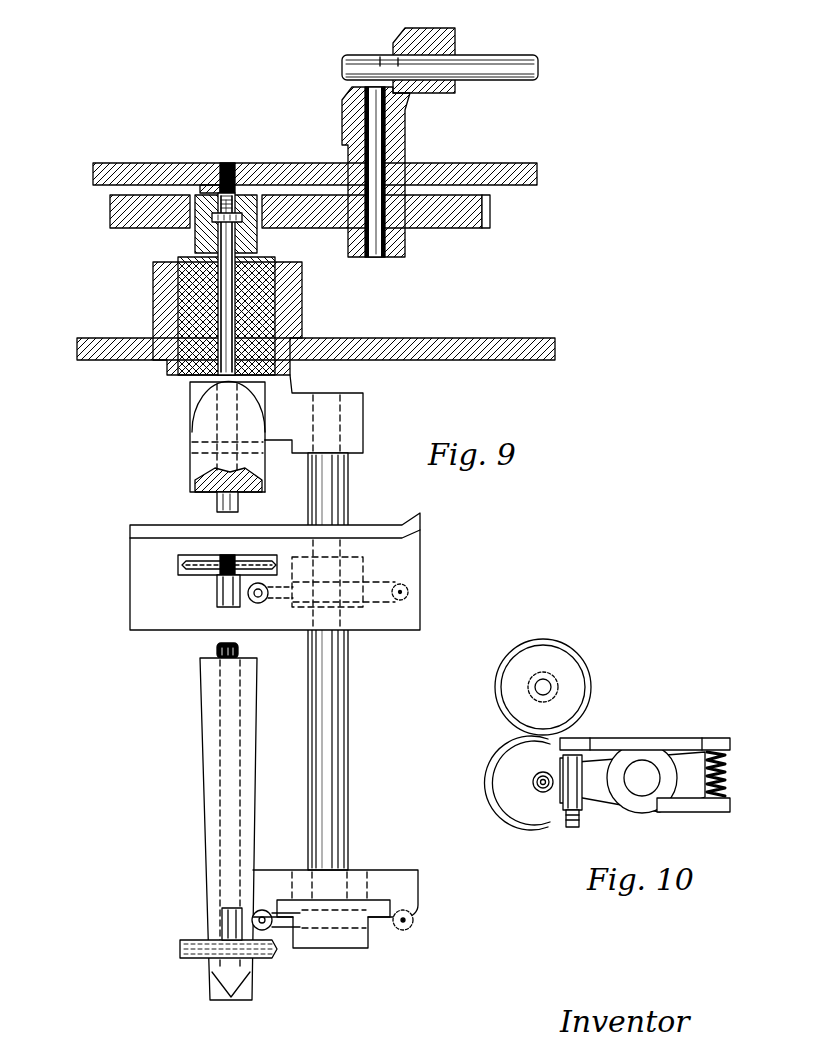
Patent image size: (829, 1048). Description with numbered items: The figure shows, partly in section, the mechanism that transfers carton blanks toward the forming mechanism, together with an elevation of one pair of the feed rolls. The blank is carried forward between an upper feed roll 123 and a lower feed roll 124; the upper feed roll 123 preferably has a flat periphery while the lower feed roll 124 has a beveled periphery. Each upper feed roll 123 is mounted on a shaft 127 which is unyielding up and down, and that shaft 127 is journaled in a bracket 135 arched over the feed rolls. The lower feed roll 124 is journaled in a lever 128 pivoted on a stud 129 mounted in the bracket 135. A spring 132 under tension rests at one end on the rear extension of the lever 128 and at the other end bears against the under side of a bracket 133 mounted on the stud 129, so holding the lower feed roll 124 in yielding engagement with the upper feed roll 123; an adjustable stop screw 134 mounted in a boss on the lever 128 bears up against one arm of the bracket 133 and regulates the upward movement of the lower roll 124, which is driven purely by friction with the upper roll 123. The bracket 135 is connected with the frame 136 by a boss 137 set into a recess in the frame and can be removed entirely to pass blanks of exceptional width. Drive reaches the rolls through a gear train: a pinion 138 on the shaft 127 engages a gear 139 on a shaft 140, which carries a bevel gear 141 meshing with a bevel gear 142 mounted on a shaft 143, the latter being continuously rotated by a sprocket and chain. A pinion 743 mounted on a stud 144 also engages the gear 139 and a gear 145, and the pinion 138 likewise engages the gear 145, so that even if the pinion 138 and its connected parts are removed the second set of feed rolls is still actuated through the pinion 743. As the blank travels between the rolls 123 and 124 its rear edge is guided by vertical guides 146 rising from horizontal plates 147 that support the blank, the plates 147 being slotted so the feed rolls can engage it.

In FIG. 9, the upper feed roll 123 is at (210, 940).
In FIG. 10, the upper feed roll 123 is at (592, 670).
In FIG. 9, the lower feed roll 124 is at (197, 566).
In FIG. 10, the lower feed roll 124 is at (505, 761).
In FIG. 9, the shaft 127 is at (238, 250).
In FIG. 10, the shaft 127 is at (550, 660).
In FIG. 9, the lever 128 is at (400, 584).
In FIG. 10, the lever 128 is at (603, 803).
In FIG. 9, the stud 129 is at (349, 707).
In FIG. 10, the stud 129 is at (642, 768).
In FIG. 9, the spring 132 is at (415, 920).
In FIG. 10, the spring 132 is at (727, 773).
In FIG. 9, the bracket 133 is at (392, 875).
In FIG. 10, the bracket 133 is at (687, 740).
In FIG. 9, the adjustable stop screw 134 is at (256, 603).
In FIG. 10, the adjustable stop screw 134 is at (570, 823).
In FIG. 9, the bracket 135 is at (192, 407).
In FIG. 9, the frame 136 is at (463, 338).
In FIG. 9, the boss 137 is at (285, 262).
In FIG. 9, the pinion 138 is at (198, 233).
In FIG. 9, the gear 139 is at (490, 216).
In FIG. 9, the shaft 140 is at (382, 258).
In FIG. 9, the bevel gear 141 is at (406, 133).
In FIG. 9, the bevel gear 142 is at (418, 42).
In FIG. 9, the shaft 143 is at (493, 65).
In FIG. 9, the stud 144 is at (231, 165).
In FIG. 9, the gear 145 is at (108, 216).
In FIG. 9, the vertical guides 146 is at (153, 538).
In FIG. 9, the horizontal plates 147 is at (132, 571).
In FIG. 9, the pinion 743 is at (207, 193).